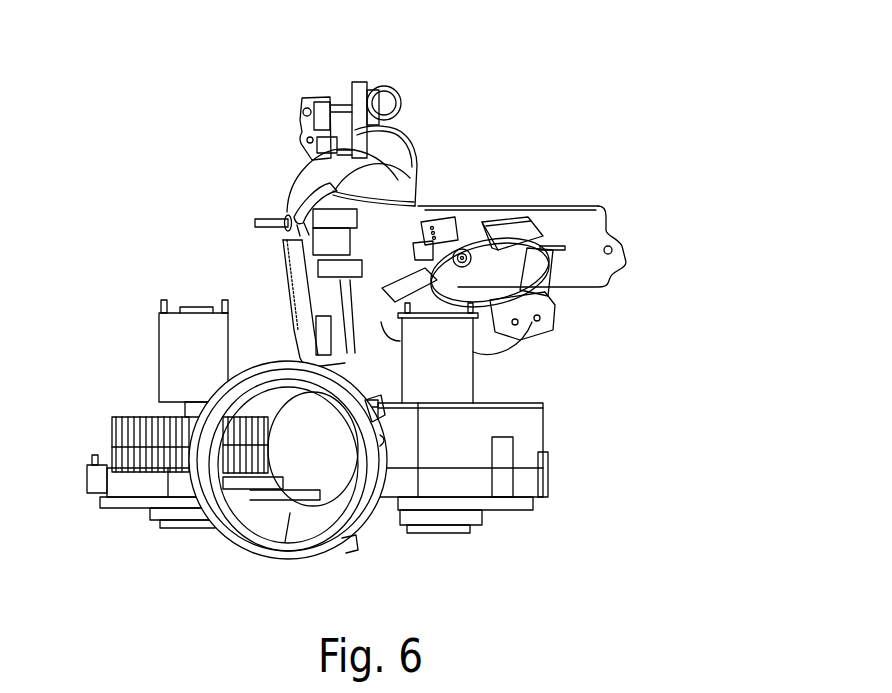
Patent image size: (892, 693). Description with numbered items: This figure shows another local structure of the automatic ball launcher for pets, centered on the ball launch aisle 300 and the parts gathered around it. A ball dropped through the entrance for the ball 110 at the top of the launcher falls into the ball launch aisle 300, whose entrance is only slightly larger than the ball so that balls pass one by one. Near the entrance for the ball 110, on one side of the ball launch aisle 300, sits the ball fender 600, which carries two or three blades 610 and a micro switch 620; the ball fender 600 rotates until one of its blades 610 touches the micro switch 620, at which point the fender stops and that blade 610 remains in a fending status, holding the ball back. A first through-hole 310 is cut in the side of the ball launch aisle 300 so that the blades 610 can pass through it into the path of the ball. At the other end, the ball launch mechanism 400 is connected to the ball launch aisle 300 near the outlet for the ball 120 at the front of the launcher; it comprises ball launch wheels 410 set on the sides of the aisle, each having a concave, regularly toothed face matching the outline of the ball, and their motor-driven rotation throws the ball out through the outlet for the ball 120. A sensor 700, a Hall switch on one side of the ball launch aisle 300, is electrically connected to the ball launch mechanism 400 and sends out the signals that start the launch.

The entrance for a ball 110 is at (397, 112).
The outlet for a ball 120 is at (313, 522).
The ball launch aisle 300 is at (393, 225).
The first through-hole 310 is at (423, 313).
The ball launch mechanism 400 is at (485, 463).
The ball launch wheel 410 is at (134, 483).
The ball fender 600 is at (493, 262).
The blade 610 is at (510, 232).
The micro switch 620 is at (537, 317).
The sensor 700 is at (307, 218).